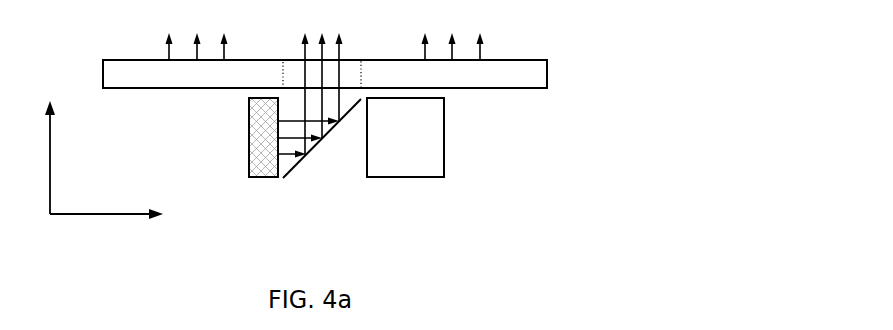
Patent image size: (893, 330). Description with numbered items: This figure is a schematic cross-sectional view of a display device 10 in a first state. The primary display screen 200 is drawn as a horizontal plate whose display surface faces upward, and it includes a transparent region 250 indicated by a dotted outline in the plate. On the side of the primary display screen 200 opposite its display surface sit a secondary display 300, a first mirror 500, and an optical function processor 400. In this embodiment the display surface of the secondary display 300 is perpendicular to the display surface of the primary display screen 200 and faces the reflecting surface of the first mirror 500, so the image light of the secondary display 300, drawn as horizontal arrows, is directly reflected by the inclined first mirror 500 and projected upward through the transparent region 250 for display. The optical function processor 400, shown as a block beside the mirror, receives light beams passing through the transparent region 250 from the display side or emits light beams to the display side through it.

The display device 10 is at (309, 131).
The primary display screen 200 is at (512, 68).
The transparent region 250 is at (352, 68).
The secondary display 300 is at (262, 128).
The optical function processor 400 is at (435, 128).
The first mirror 500 is at (323, 137).